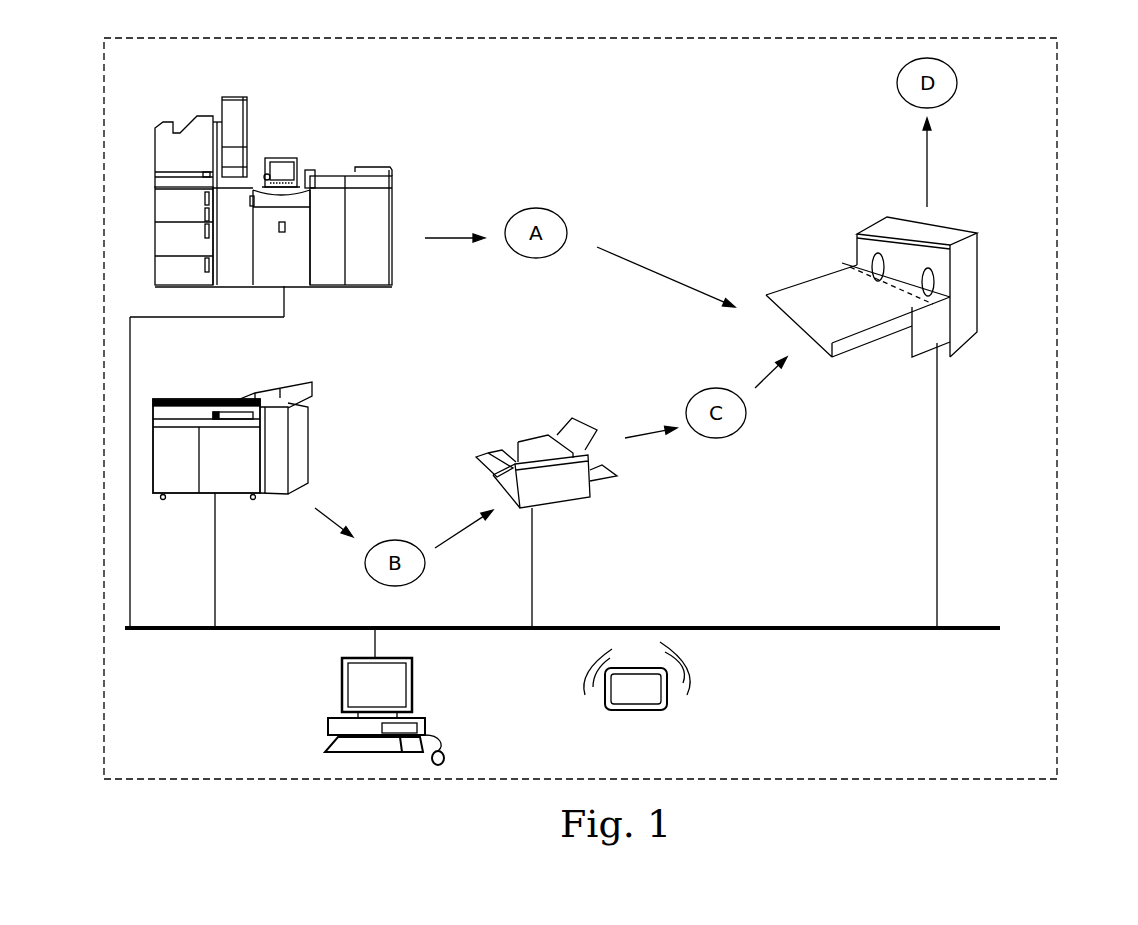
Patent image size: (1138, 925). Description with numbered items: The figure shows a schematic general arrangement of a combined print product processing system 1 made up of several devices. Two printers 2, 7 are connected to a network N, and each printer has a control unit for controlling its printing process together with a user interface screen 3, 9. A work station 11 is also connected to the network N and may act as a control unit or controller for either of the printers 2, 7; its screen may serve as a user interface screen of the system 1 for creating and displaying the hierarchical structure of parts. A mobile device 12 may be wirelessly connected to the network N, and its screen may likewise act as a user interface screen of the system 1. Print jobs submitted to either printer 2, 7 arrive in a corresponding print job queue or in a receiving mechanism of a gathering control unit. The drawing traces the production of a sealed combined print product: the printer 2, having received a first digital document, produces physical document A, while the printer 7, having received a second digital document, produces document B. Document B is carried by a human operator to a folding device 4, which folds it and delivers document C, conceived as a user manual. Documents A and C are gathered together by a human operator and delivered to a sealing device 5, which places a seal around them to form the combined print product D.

The combined print product processing system 1 is at (1057, 132).
The printer 2 is at (273, 218).
The user interface screen 3 is at (228, 428).
The folding device 4 is at (580, 503).
The sealing device 5 is at (980, 282).
The printer 7 is at (263, 441).
The user interface screen 9 is at (285, 158).
The work station 11 is at (420, 725).
The mobile device 12 is at (616, 710).
The network N is at (817, 630).